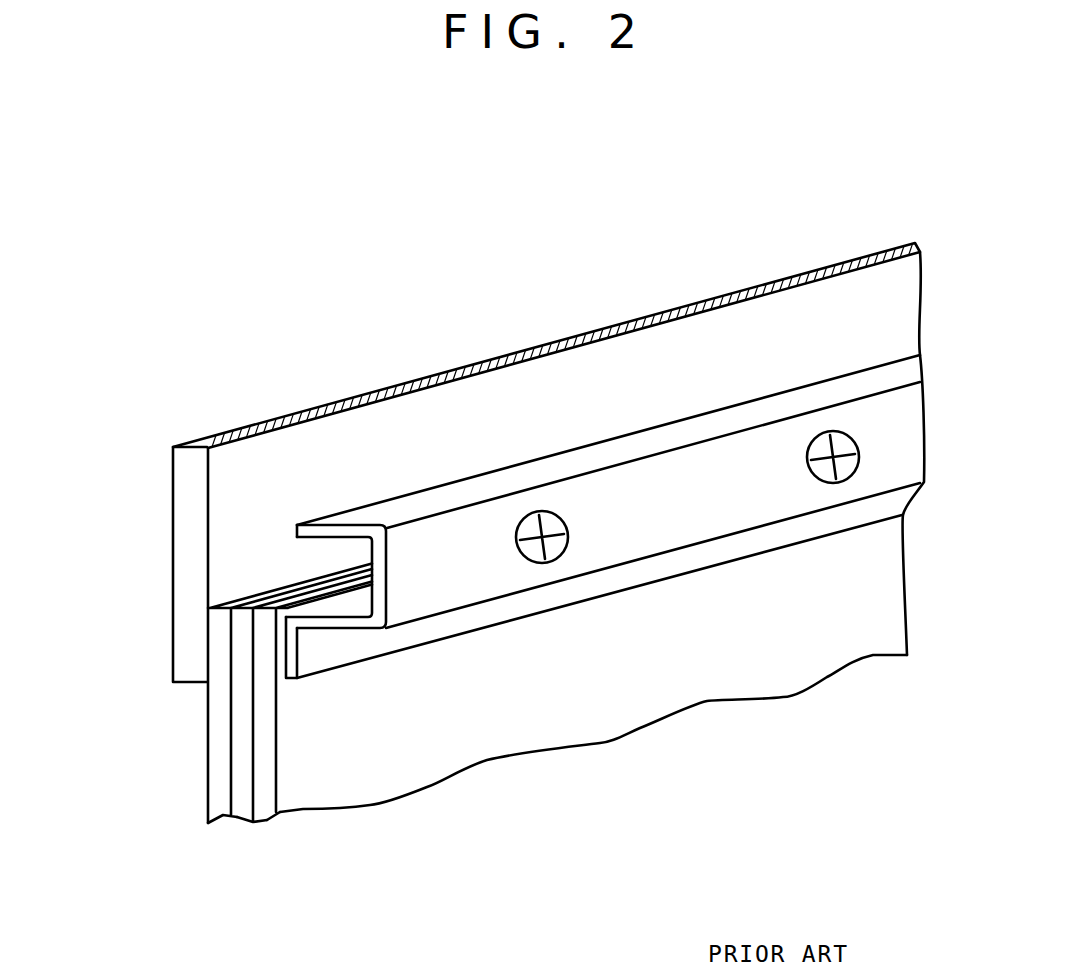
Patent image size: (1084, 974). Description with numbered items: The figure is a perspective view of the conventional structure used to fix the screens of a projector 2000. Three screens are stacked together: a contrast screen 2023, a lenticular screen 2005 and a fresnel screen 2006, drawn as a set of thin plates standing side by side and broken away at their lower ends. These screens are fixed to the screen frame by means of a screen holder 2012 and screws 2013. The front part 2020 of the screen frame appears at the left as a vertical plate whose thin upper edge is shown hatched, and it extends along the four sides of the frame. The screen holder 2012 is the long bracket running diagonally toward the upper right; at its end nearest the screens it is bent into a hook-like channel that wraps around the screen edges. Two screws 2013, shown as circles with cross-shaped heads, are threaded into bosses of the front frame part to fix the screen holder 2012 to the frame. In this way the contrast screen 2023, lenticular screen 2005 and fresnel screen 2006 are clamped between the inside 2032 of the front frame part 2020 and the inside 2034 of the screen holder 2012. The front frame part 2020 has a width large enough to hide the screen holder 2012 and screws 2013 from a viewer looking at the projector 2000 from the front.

The projector 2000 is at (676, 203).
The screen holder 2012 is at (665, 570).
The screws 2013 is at (563, 512).
The front part 2020 is at (192, 559).
The contrast screen 2023 is at (220, 780).
The lenticular screen 2005 is at (243, 802).
The fresnel screen 2006 is at (265, 803).
The inside of the front frame part 2032 is at (263, 462).
The inside of the screen holder 2034 is at (292, 647).